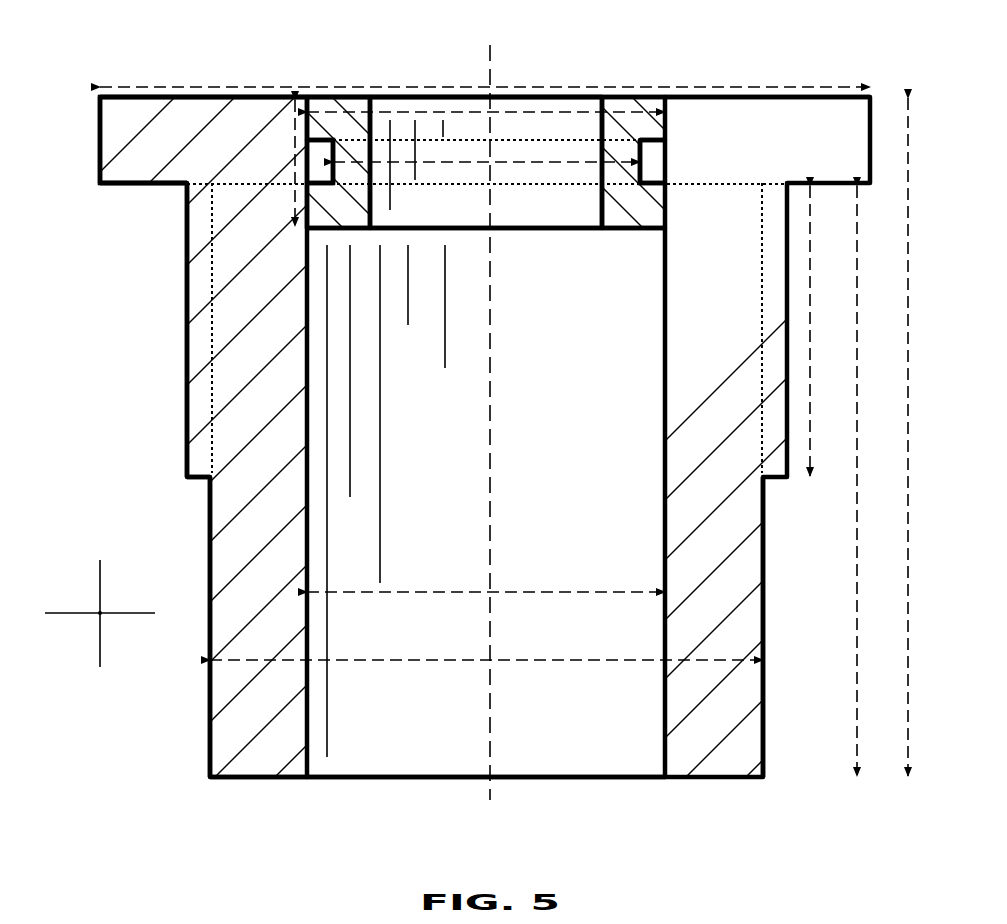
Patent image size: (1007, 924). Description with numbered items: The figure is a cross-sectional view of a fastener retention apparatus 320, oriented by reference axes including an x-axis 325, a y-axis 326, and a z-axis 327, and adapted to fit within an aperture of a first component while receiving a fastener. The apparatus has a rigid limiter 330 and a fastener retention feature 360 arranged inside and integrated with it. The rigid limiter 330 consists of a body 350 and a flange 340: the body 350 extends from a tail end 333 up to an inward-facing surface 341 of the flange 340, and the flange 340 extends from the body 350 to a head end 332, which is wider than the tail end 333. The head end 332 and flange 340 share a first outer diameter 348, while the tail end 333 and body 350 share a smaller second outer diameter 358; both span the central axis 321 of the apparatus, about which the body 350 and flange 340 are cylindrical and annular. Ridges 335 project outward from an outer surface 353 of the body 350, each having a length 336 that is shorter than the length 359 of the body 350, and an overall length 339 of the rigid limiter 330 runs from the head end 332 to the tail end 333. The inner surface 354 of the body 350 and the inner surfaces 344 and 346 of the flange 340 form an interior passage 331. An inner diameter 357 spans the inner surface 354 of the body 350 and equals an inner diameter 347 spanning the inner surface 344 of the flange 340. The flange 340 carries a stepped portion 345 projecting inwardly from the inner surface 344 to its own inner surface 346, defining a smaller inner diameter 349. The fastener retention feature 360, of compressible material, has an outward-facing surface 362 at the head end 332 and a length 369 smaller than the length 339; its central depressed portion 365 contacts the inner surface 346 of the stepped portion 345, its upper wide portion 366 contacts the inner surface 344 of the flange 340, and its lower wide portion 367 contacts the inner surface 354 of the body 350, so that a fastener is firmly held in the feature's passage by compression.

The fastener retention apparatus 320 is at (113, 50).
The central axis 321 is at (490, 478).
The x-axis 325 is at (135, 613).
The y-axis 326 is at (100, 613).
The z-axis 327 is at (100, 562).
The rigid limiter 330 is at (187, 233).
The interior passage 331 is at (603, 745).
The head end 332 is at (290, 82).
The tail end 333 is at (305, 788).
The ridges 335 is at (195, 480).
The length of each ridge 336 is at (810, 437).
The length of the rigid limiter 339 is at (908, 437).
The flange 340 is at (110, 160).
The inward-facing surface of the flange 341 is at (168, 190).
The inner surface of the flange 344 is at (668, 145).
The stepped portion 345 is at (322, 168).
The inner surface of the stepped portion 346 is at (643, 176).
The inner diameter of the flange 347 is at (560, 111).
The outer diameter of the flange 348 is at (808, 87).
The inner diameter of the stepped portion 349 is at (525, 162).
The body 350 is at (228, 690).
The outer surface of the body 353 is at (765, 573).
The inner surface of the body 354 is at (594, 485).
The inner diameter of the body 357 is at (535, 591).
The outer diameter of the body 358 is at (530, 660).
The body length 359 is at (857, 437).
The fastener retention feature 360 is at (603, 233).
The outward-facing surface of the fastener retention feature 362 is at (336, 100).
The central depressed portion 365 is at (498, 213).
The upper wide portion 366 is at (563, 178).
The lower wide portion 367 is at (457, 123).
The length of the fastener retention feature 369 is at (293, 150).